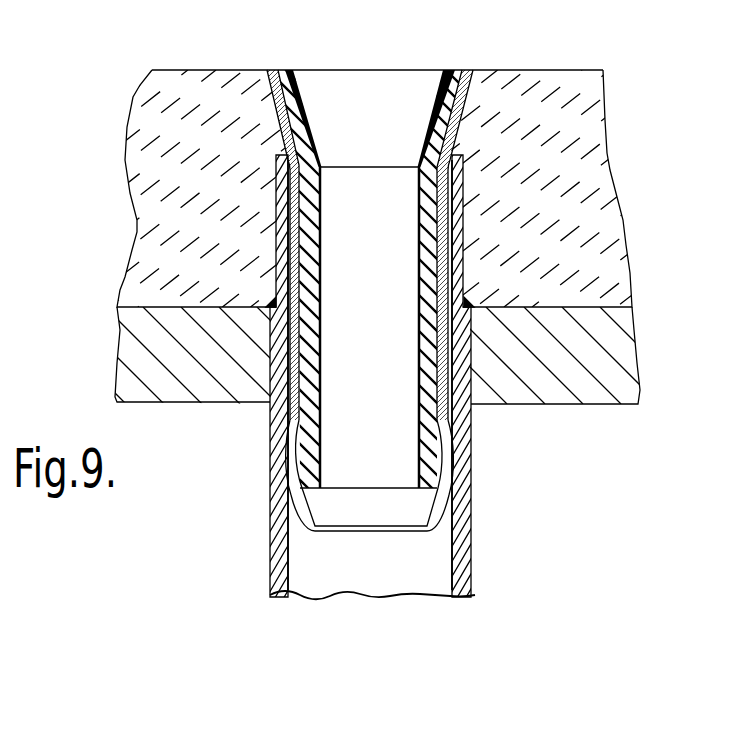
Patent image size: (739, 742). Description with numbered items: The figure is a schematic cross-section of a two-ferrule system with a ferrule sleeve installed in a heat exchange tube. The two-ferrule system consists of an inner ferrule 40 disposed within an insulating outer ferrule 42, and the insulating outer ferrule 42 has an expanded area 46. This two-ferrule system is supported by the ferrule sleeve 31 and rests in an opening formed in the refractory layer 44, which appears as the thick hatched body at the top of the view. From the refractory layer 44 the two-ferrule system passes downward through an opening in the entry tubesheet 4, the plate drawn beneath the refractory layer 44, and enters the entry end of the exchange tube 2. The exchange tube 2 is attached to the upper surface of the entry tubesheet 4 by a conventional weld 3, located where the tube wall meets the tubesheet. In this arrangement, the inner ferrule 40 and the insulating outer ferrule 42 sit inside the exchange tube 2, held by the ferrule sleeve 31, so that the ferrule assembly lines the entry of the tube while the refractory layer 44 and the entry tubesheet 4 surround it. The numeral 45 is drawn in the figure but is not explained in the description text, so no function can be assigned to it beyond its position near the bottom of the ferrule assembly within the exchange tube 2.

The exchange tube 2 is at (473, 523).
The weld 3 is at (476, 311).
The entry tubesheet 4 is at (633, 354).
The ferrule sleeve 31 is at (463, 262).
The inner ferrule 40 is at (281, 71).
The insulating outer ferrule 42 is at (470, 71).
The refractory layer 44 is at (133, 269).
The liner bottom 45 is at (313, 533).
The expanded area 46 is at (269, 456).